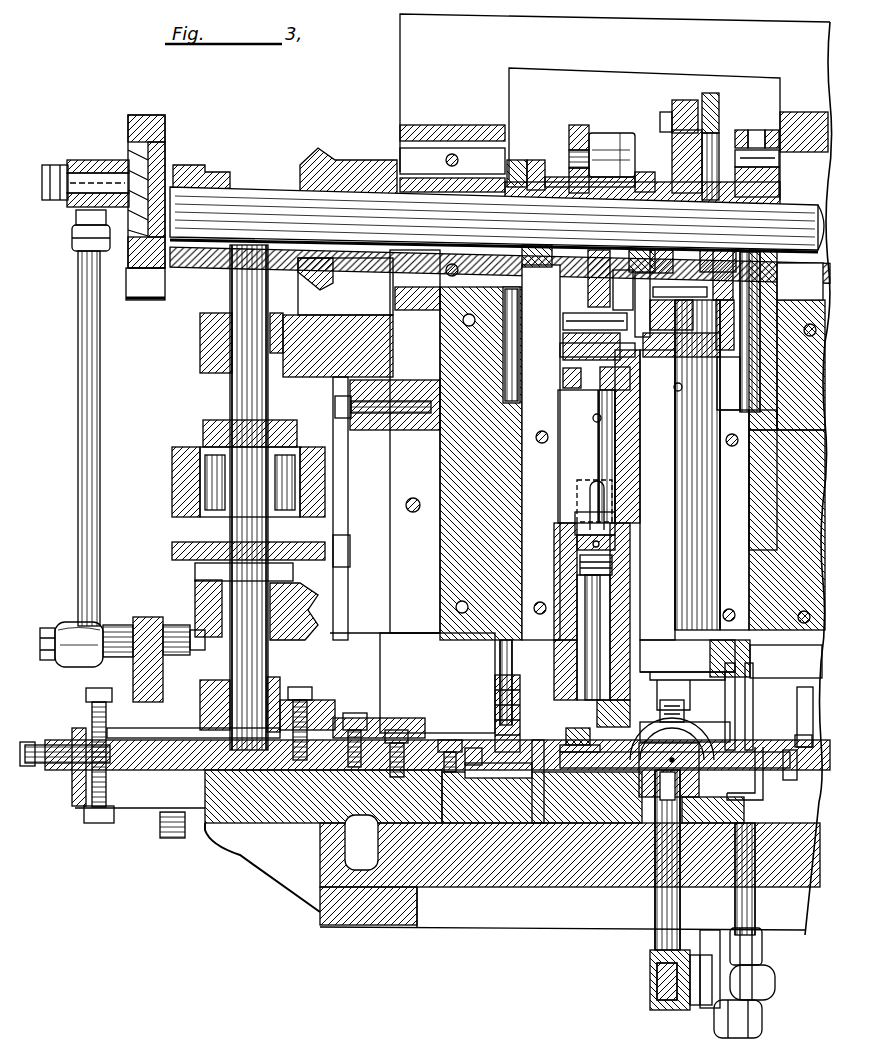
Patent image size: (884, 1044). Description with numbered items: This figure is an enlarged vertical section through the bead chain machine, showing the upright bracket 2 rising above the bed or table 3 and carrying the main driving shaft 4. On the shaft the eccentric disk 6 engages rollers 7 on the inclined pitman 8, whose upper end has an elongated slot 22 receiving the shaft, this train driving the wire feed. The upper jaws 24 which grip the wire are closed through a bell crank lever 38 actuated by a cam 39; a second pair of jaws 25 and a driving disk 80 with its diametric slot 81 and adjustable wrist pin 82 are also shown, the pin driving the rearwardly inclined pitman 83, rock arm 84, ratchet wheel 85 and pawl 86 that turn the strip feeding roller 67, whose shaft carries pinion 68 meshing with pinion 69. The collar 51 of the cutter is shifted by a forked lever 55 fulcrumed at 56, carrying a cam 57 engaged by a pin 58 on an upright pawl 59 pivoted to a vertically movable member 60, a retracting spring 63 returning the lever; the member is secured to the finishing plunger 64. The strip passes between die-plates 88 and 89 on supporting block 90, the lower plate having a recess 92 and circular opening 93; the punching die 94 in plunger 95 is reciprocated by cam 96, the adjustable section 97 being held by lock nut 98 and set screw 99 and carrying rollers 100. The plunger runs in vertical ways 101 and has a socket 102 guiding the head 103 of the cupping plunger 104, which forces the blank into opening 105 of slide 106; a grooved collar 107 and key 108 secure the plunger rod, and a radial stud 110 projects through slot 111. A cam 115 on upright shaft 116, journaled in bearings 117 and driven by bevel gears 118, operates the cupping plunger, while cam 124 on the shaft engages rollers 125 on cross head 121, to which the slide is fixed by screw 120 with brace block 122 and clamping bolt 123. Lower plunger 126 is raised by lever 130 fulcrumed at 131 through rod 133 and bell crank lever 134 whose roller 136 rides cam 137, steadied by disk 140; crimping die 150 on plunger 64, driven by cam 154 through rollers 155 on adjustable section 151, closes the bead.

The upright bracket 2 is at (400, 92).
The main supporting bed or table 3 is at (325, 886).
The main driving shaft 4 is at (266, 208).
The eccentric disk 6 is at (539, 160).
The rollers 7 is at (540, 270).
The pitman 8 is at (520, 345).
The elongated slot 22 is at (510, 185).
The upper jaws 24 is at (716, 760).
The cam 25 is at (706, 748).
The bell crank lever 38 is at (641, 252).
The cam 39 is at (650, 166).
The collar 51 is at (690, 722).
The forked lever 55 is at (764, 788).
The fulcrum 56 is at (735, 740).
The cam 57 is at (790, 768).
The pin 58 is at (802, 740).
The upright pawl 59 is at (797, 702).
The vertically movable member 60 is at (786, 661).
The retracting spring 63 is at (756, 745).
The plunger 64 is at (692, 550).
The roller 67 is at (556, 690).
The pinion 68 is at (498, 770).
The pinion 69 is at (496, 682).
The disk 80 is at (152, 120).
The diametric slot 81 is at (143, 300).
The wrist pin 82 is at (120, 160).
The pitman 83 is at (100, 378).
The rock arm 84 is at (145, 618).
The ratchet wheel 85 is at (171, 838).
The pawl 86 is at (173, 625).
The die-plate 88 is at (566, 746).
The die-plate 89 is at (570, 735).
The supporting block 90 is at (746, 816).
The recess 92 is at (533, 771).
The circular opening 93 is at (653, 770).
The punching die 94 is at (612, 735).
The plunger 95 is at (556, 565).
The cam 96 is at (563, 320).
The adjustable section 97 is at (578, 125).
The lock nut 98 is at (563, 375).
The set screw 99 is at (593, 418).
The rollers 100 is at (612, 128).
The vertical ways 101 is at (558, 483).
The socket 102 is at (578, 516).
The head 103 is at (620, 543).
The cupping plunger 104 is at (600, 612).
The opening 105 is at (542, 797).
The slide 106 is at (477, 750).
The grooved collar 107 is at (578, 545).
The key 108 is at (614, 562).
The radial stud 110 is at (615, 526).
The elongated slot 111 is at (616, 504).
The cam 115 is at (186, 520).
The upright shaft 116 is at (224, 402).
The bearings 117 is at (200, 350).
The bevel gears 118 is at (316, 280).
The screw 120 is at (447, 740).
The cross head 121 is at (192, 770).
The brace-block 122 is at (393, 733).
The clamping bolt 123 is at (384, 730).
The cam 124 is at (157, 720).
The rollers 125 is at (306, 702).
The plunger 126 is at (655, 914).
The lever 130 is at (650, 988).
The fulcrum 131 is at (700, 1008).
The rod or pitman 133 is at (767, 308).
The bell-crank lever 134 is at (765, 132).
The roller 136 is at (780, 166).
The cam 137 is at (758, 268).
The disk 140 is at (717, 250).
The bead crimping die 150 is at (672, 700).
The adjustable upper section 151 is at (710, 93).
The cam 154 is at (665, 148).
The rollers 155 is at (683, 100).